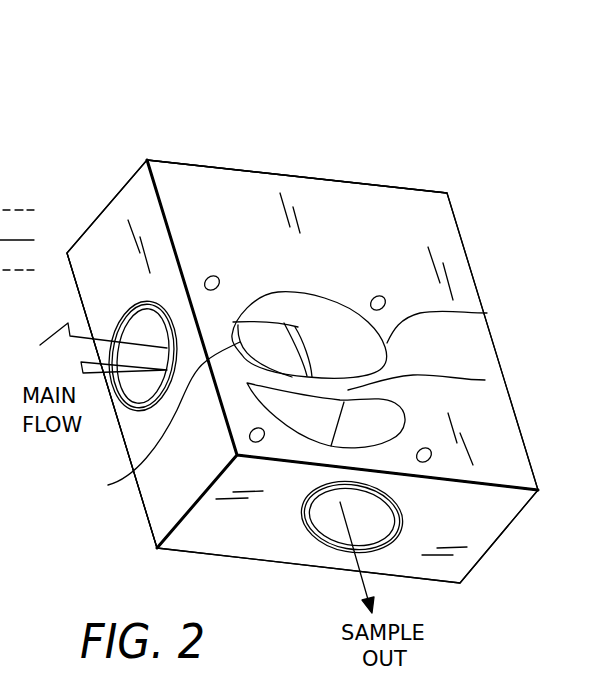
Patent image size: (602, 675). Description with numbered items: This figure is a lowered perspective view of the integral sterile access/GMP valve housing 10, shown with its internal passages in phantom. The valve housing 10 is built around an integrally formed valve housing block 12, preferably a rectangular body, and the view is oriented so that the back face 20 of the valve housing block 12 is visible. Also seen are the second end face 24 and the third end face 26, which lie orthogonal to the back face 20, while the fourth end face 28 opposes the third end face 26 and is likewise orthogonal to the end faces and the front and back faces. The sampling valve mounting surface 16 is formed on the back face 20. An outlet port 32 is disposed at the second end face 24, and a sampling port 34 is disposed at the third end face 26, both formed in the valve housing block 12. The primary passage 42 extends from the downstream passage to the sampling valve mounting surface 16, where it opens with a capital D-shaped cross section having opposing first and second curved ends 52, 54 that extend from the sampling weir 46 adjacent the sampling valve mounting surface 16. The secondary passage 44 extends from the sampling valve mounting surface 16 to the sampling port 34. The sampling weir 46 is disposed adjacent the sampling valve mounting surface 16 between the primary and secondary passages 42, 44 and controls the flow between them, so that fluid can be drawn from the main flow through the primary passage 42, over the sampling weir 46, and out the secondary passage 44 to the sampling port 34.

The valve housing 10 is at (183, 84).
The valve housing block 12 is at (182, 173).
The sampling valve mounting surface 16 is at (413, 343).
The back face 20 is at (400, 200).
The second end face 24 is at (153, 515).
The third end face 26 is at (227, 547).
The fourth end face 28 is at (243, 169).
The outlet port 32 is at (140, 407).
The sampling port 34 is at (306, 556).
The primary passage 42 is at (325, 342).
The secondary passage 44 is at (366, 423).
The sampling weir 46 is at (485, 380).
The first curved end 52 is at (154, 424).
The second curved end 54 is at (487, 313).